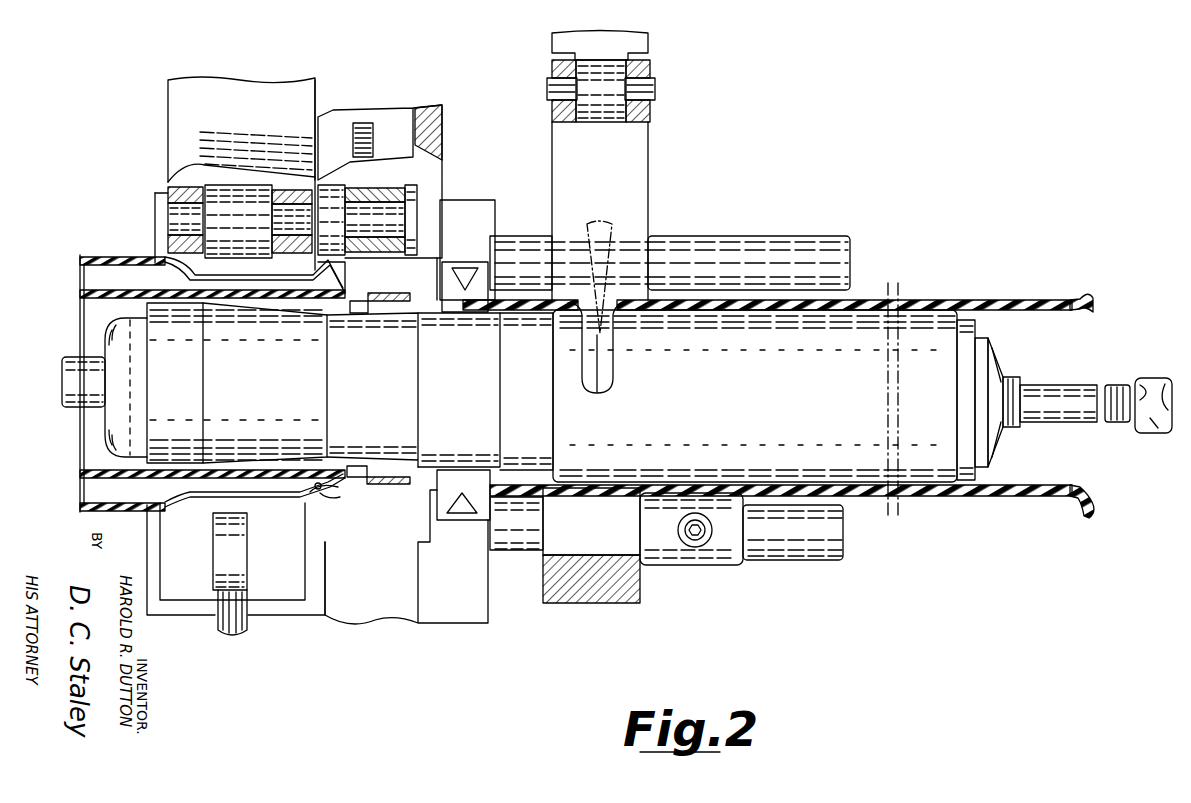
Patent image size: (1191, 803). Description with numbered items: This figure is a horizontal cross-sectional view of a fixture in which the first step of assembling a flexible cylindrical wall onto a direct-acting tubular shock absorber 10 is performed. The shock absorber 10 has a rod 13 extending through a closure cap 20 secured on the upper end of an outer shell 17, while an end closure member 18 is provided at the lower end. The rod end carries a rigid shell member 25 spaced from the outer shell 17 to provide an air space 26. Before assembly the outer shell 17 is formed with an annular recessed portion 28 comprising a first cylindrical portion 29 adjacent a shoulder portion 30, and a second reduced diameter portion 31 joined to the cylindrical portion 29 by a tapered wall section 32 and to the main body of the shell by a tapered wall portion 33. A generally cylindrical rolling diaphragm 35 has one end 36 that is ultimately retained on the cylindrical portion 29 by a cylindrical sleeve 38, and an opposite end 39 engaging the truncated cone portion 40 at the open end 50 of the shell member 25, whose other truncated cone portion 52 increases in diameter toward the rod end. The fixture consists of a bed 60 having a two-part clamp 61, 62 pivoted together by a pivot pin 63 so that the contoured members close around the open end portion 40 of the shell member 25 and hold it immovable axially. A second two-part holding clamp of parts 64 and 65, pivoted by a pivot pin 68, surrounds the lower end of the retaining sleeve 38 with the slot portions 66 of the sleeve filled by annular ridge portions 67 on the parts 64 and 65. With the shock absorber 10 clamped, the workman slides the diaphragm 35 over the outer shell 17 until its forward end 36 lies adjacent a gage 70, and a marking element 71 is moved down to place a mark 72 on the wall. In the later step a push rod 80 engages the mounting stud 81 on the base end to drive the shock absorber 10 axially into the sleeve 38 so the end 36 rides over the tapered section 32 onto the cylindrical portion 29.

The shock absorber 10 is at (596, 392).
The rod 13 is at (75, 380).
The outer shell 17 is at (158, 360).
The end closure member 18 is at (995, 380).
The closure cap 20 is at (118, 412).
The rigid shell member 25 is at (98, 257).
The air space 26 is at (88, 265).
The annular recessed portion 28 is at (380, 466).
The first cylindrical portion 29 is at (540, 468).
The shoulder portion 30 is at (553, 482).
The second reduced diameter portion 31 is at (405, 462).
The tapered wall section 32 is at (455, 468).
The tapered wall portion 33 is at (295, 460).
The rolling diaphragm 35 is at (992, 492).
The end of rolling diaphragm 36 is at (462, 318).
The cylindrical sleeve 38 is at (90, 290).
The opposite end of rolling diaphragm 39 is at (1086, 510).
The truncated cone portion 40 is at (235, 495).
The open end 50 is at (335, 490).
The truncated cone portion 52 is at (322, 498).
The bed 60 is at (298, 620).
The clamp part 61 is at (172, 190).
The clamp part 62 is at (178, 135).
The pivot pin 63 is at (178, 212).
The holding clamp part 64 is at (420, 262).
The holding clamp part 65 is at (432, 175).
The slot portions 66 is at (375, 305).
The annular ridge portions 67 is at (360, 150).
The pivot pin 68 is at (380, 215).
The gage 70 is at (468, 262).
The marking element 71 is at (612, 230).
The mark 72 is at (605, 370).
The push rod 80 is at (1152, 420).
The mounting stud 81 is at (1116, 385).